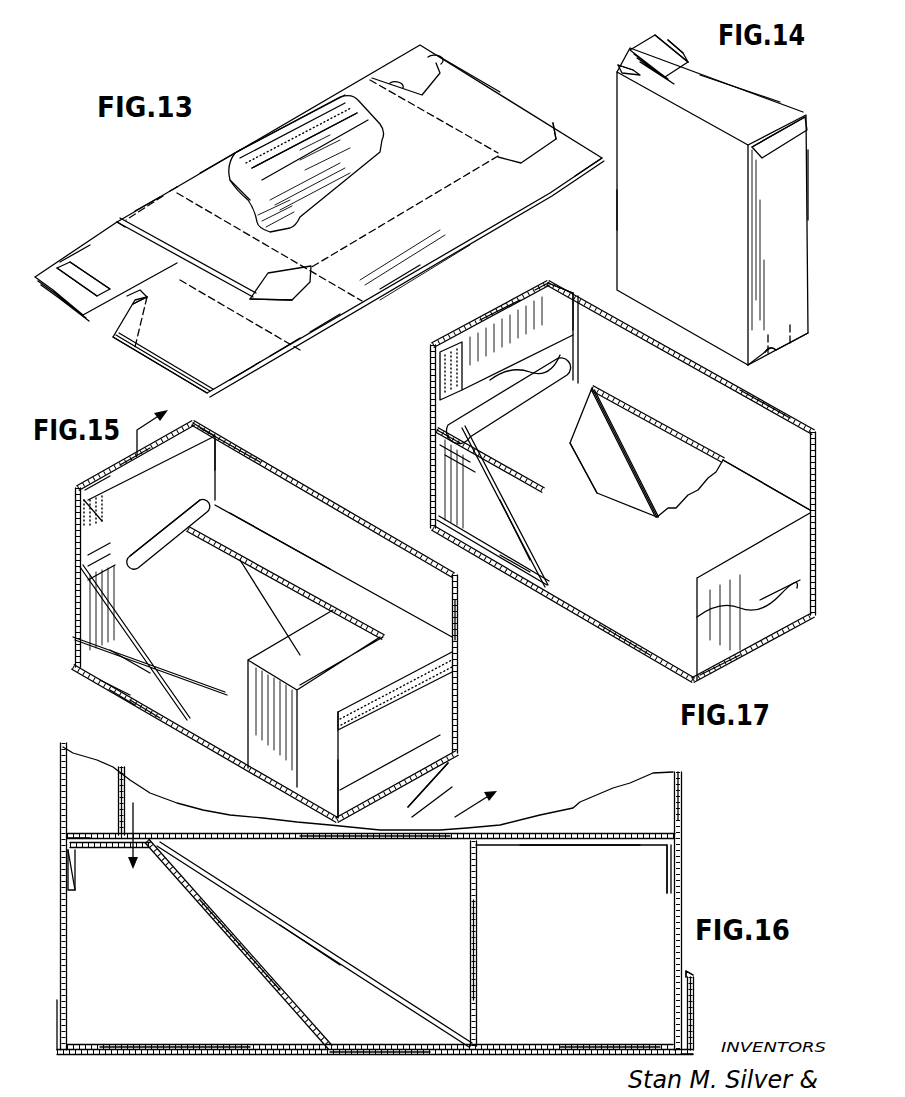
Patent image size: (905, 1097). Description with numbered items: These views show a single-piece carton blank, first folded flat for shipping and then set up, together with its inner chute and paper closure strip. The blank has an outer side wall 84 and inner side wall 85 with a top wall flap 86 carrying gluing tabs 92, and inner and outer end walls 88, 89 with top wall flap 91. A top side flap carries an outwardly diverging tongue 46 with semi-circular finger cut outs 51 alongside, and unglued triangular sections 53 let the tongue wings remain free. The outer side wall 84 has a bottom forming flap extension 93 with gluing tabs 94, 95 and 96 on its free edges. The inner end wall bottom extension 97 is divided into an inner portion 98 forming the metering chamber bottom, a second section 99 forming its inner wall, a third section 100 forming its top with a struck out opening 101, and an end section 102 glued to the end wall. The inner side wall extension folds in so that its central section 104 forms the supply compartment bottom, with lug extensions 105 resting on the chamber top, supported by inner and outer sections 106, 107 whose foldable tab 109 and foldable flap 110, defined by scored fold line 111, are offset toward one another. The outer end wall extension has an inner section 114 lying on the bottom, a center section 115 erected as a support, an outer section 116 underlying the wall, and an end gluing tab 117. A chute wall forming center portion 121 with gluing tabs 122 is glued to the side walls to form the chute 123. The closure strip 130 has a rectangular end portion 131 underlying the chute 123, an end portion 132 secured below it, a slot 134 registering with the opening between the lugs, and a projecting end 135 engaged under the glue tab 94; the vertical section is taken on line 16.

In FIG. 14, the outwardly diverging tongue 46 is at (660, 43).
In FIG. 14, the semi-circular finger cut outs 51 is at (678, 50).
In FIG. 14, the triangular sections 53 is at (618, 68).
In FIG. 13, the outer side wall 84 is at (212, 160).
In FIG. 14, the outer side wall 84 is at (628, 208).
In FIG. 15, the inner side wall 85 is at (443, 613).
In FIG. 17, the inner side wall 85 is at (770, 410).
In FIG. 16, the inner side wall 85 is at (653, 783).
In FIG. 13, the top wall flap 86 is at (495, 95).
In FIG. 14, the top wall flap 86 is at (743, 85).
In FIG. 13, the inner end wall 88 is at (244, 163).
In FIG. 15, the inner end wall 88 is at (92, 482).
In FIG. 17, the inner end wall 88 is at (487, 318).
In FIG. 13, the outer end wall 89 is at (400, 280).
In FIG. 14, the outer end wall 89 is at (797, 175).
In FIG. 13, the top wall flap 91 is at (562, 173).
In FIG. 13, the gluing tabs 92 is at (553, 130).
In FIG. 14, the gluing tabs 92 is at (797, 115).
In FIG. 13, the bottom forming flap extension 93 is at (173, 187).
In FIG. 15, the bottom forming flap extension 93 is at (142, 712).
In FIG. 16, the bottom forming flap extension 93 is at (380, 1056).
In FIG. 13, the gluing tab 94 is at (280, 277).
In FIG. 14, the gluing tab 94 is at (775, 350).
In FIG. 15, the gluing tab 94 is at (447, 767).
In FIG. 16, the gluing tab 94 is at (693, 993).
In FIG. 13, the gluing tab 95 is at (117, 223).
In FIG. 13, the gluing tab 96 is at (157, 188).
In FIG. 16, the gluing tab 96 is at (57, 1052).
In FIG. 13, the inner end wall bottom extension 97 is at (93, 247).
In FIG. 15, the inner portion 98 is at (122, 693).
In FIG. 17, the inner portion 98 is at (510, 560).
In FIG. 16, the inner portion 98 is at (170, 1030).
In FIG. 15, the second section 99 is at (100, 680).
In FIG. 17, the second section 99 is at (503, 517).
In FIG. 16, the second section 99 is at (227, 940).
In FIG. 13, the third section 100 is at (107, 307).
In FIG. 15, the third section 100 is at (103, 578).
In FIG. 17, the third section 100 is at (440, 447).
In FIG. 13, the struck out opening 101 is at (67, 280).
In FIG. 17, the struck out opening 101 is at (448, 457).
In FIG. 16, the struck out opening 101 is at (87, 841).
In FIG. 13, the end section 102 is at (80, 302).
In FIG. 17, the end section 102 is at (433, 437).
In FIG. 16, the end section 102 is at (77, 887).
In FIG. 15, the central section 104 is at (277, 550).
In FIG. 17, the central section 104 is at (738, 498).
In FIG. 16, the central section 104 is at (383, 840).
In FIG. 15, the lug extensions 105 is at (223, 483).
In FIG. 16, the lug extensions 105 is at (107, 812).
In FIG. 17, the inner section 106 is at (793, 607).
In FIG. 17, the outer section 107 is at (630, 633).
In FIG. 17, the foldable tab 109 is at (568, 472).
In FIG. 16, the foldable tab 109 is at (263, 967).
In FIG. 17, the foldable flap 110 is at (523, 470).
In FIG. 16, the scored fold line 111 is at (667, 863).
In FIG. 13, the inner section 114 is at (323, 317).
In FIG. 17, the inner section 114 is at (730, 647).
In FIG. 16, the inner section 114 is at (640, 1046).
In FIG. 13, the center section 115 is at (283, 337).
In FIG. 16, the center section 115 is at (478, 957).
In FIG. 13, the outer section 116 is at (248, 363).
In FIG. 16, the outer section 116 is at (580, 845).
In FIG. 13, the end gluing tab 117 is at (179, 374).
In FIG. 13, the chute wall forming center portion 121 is at (323, 130).
In FIG. 15, the chute wall forming center portion 121 is at (217, 466).
In FIG. 17, the chute wall forming center portion 121 is at (565, 297).
In FIG. 13, the gluing tabs 122 is at (280, 132).
In FIG. 15, the gluing tabs 122 is at (80, 510).
In FIG. 17, the gluing tabs 122 is at (573, 262).
In FIG. 15, the chute 123 is at (133, 470).
In FIG. 17, the chute 123 is at (543, 283).
In FIG. 15, the strip 130 is at (148, 655).
In FIG. 16, the strip 130 is at (553, 1046).
In FIG. 15, the rectangular end portion 131 is at (97, 563).
In FIG. 15, the end portion 132 is at (97, 553).
In FIG. 15, the slot 134 is at (140, 548).
In FIG. 15, the projecting end 135 is at (420, 790).
In FIG. 16, the projecting end 135 is at (687, 975).
In FIG. 15, the section line 16 is at (336, 606).